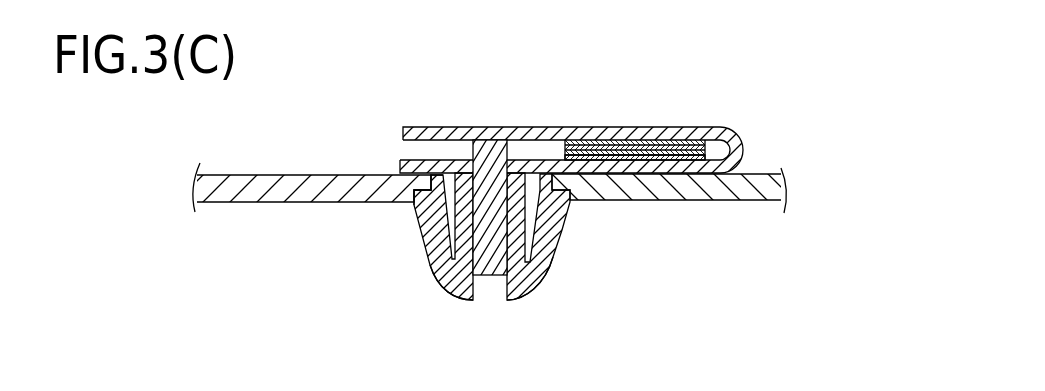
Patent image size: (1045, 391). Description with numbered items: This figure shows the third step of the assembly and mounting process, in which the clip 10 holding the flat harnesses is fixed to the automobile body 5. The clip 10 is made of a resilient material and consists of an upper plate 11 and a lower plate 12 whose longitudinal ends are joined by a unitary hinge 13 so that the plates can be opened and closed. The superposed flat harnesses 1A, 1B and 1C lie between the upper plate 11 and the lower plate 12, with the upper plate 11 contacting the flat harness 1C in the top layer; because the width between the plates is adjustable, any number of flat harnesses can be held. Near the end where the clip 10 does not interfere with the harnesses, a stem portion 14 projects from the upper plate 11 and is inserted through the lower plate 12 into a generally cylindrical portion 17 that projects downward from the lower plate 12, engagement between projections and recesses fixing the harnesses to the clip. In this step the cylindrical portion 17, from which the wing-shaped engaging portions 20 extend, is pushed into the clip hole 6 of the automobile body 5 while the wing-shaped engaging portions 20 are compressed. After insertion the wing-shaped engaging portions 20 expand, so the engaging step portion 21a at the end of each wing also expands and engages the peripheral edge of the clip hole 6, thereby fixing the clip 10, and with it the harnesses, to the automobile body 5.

The automobile body 5 is at (725, 197).
The clip hole 6 is at (433, 182).
The clip 10 is at (633, 166).
The upper plate 11 is at (537, 132).
The lower plate 12 is at (430, 167).
The hinge 13 is at (745, 152).
The stem portion 14 is at (487, 162).
The cylindrical portion 17 is at (433, 277).
The wing-shaped engaging portion 20 is at (484, 263).
The engaging step portion 21a is at (415, 205).
The flat harness 1A is at (667, 157).
The flat harness 1B is at (730, 135).
The flat harness 1C is at (605, 140).